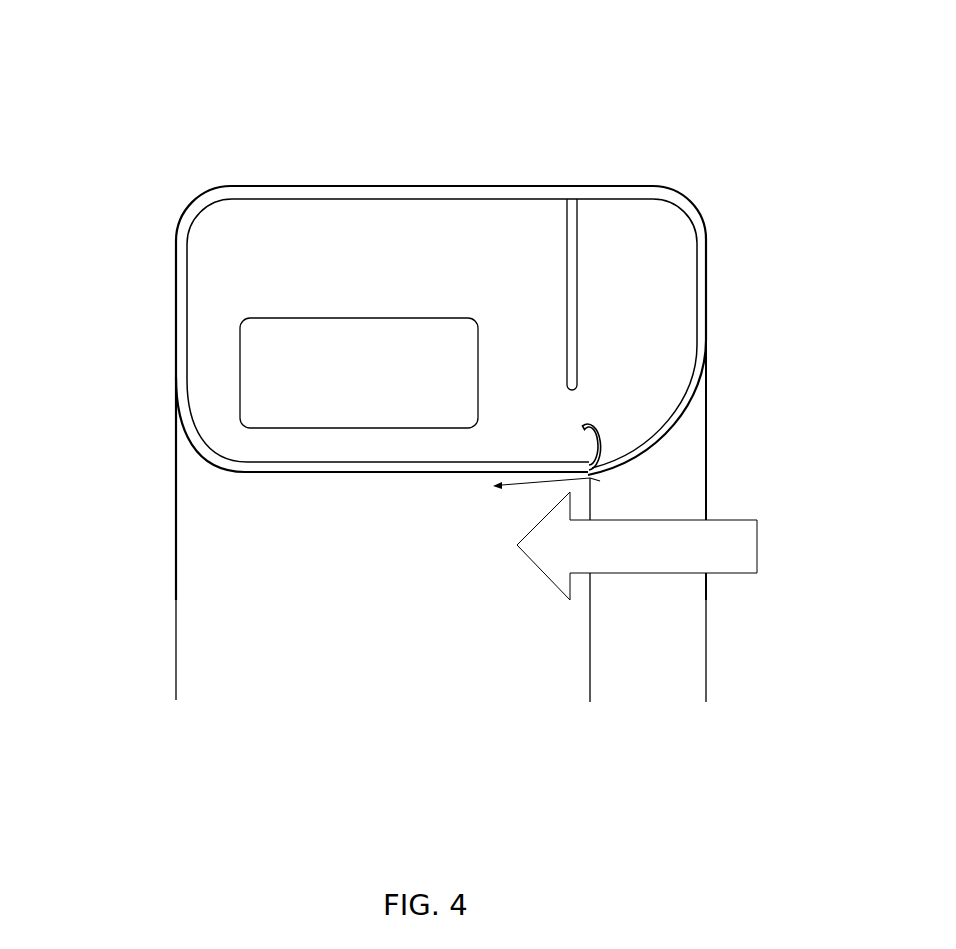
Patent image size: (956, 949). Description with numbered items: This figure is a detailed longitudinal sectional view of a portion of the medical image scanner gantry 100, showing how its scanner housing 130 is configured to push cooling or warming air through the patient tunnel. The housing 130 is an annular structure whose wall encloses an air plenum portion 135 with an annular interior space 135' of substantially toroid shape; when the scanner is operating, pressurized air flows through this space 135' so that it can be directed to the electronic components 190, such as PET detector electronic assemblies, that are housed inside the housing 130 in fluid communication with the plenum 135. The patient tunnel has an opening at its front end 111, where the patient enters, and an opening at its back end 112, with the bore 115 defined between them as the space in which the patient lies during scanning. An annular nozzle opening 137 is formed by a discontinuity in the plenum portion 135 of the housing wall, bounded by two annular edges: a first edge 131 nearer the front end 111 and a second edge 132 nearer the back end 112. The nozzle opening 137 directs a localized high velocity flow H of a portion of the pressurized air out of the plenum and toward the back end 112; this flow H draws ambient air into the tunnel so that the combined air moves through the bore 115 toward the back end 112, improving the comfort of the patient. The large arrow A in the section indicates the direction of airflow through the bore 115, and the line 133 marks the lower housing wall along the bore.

The medical image scanner gantry 100 is at (336, 90).
The scanner housing 130 is at (408, 187).
The first edge 131 is at (598, 480).
The second edge 132 is at (580, 447).
The bottom wall 133 is at (438, 486).
The air plenum portion 135 is at (619, 242).
The annular interior space 135' is at (692, 179).
The annular nozzle opening 137 is at (611, 451).
The electronic components 190 is at (252, 363).
The front end 111 is at (717, 622).
The back end 112 is at (167, 580).
The bore 115 is at (203, 638).
The direction of insertion A is at (632, 573).
The high velocity flow H is at (530, 483).